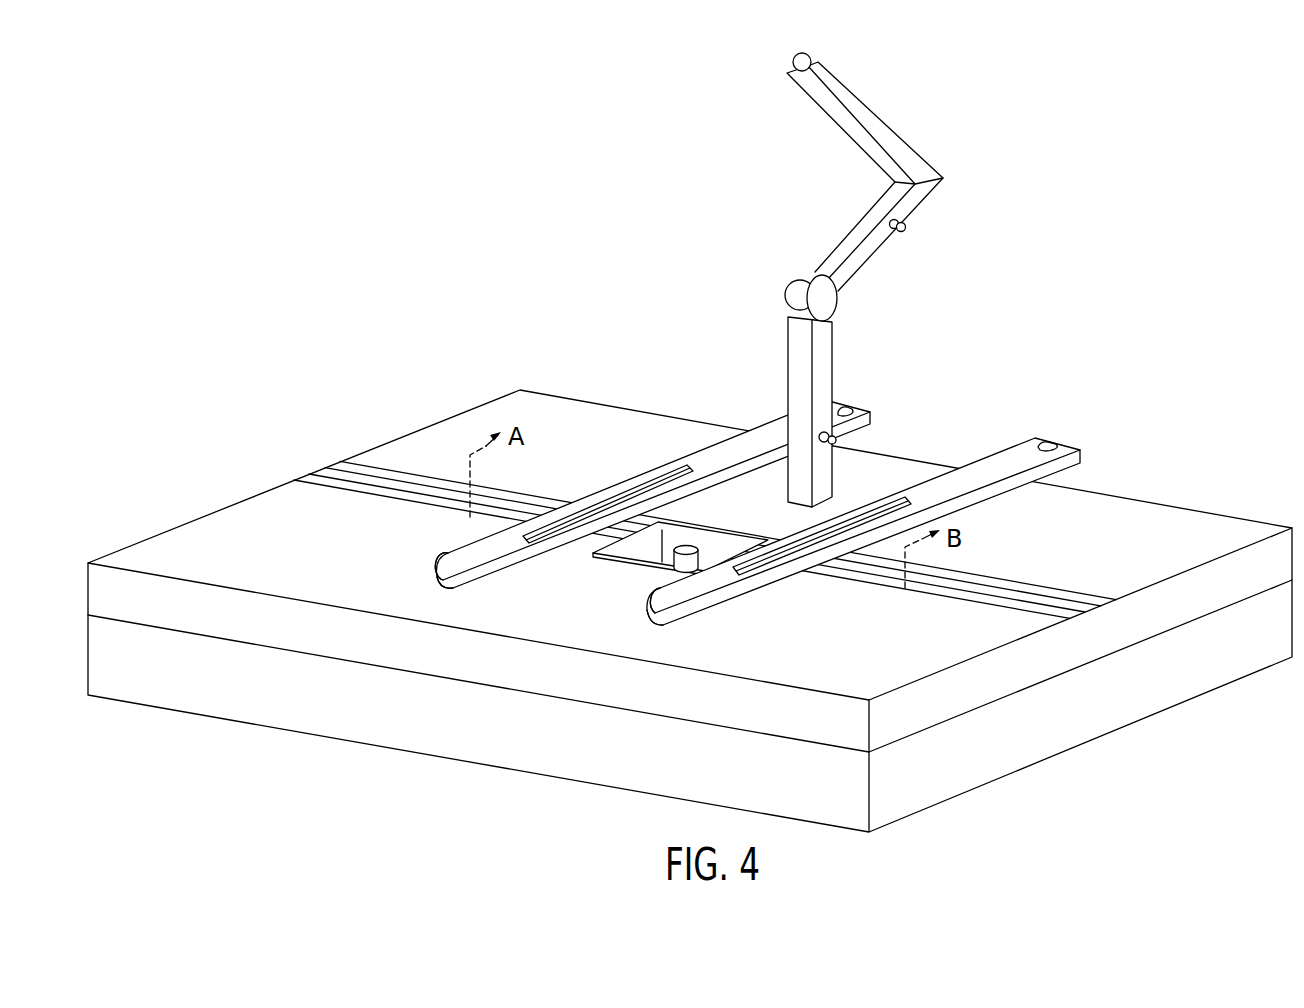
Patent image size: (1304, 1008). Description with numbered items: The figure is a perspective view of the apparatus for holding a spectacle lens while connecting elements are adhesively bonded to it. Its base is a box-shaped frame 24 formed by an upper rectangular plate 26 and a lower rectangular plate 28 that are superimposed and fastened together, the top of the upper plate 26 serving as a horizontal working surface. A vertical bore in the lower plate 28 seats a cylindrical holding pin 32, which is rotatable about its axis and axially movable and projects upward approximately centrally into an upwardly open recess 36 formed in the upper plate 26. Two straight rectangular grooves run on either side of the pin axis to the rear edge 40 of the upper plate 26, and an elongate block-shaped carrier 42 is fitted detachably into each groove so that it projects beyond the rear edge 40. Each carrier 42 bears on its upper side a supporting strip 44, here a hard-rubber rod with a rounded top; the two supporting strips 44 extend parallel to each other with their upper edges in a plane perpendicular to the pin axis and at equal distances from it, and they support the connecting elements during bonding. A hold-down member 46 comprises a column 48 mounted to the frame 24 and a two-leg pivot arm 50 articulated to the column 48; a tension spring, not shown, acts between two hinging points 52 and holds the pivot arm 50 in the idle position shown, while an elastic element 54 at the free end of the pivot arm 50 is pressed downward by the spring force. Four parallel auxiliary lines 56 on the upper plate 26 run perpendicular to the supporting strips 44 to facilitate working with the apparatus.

The frame 24 is at (298, 441).
The upper rectangular plate 26 is at (187, 536).
The lower rectangular plate 28 is at (152, 694).
The holding pin 32 is at (689, 548).
The recess 36 is at (636, 559).
The rear edge 40 is at (907, 458).
The carrier 42 is at (441, 574).
The supporting strip 44 is at (618, 490).
The hold-down member 46 is at (849, 304).
The column 48 is at (798, 395).
The pivot arm 50 is at (860, 122).
The hinging point 52 is at (903, 232).
The elastic element 54 is at (795, 58).
The auxiliary line 56 is at (342, 488).